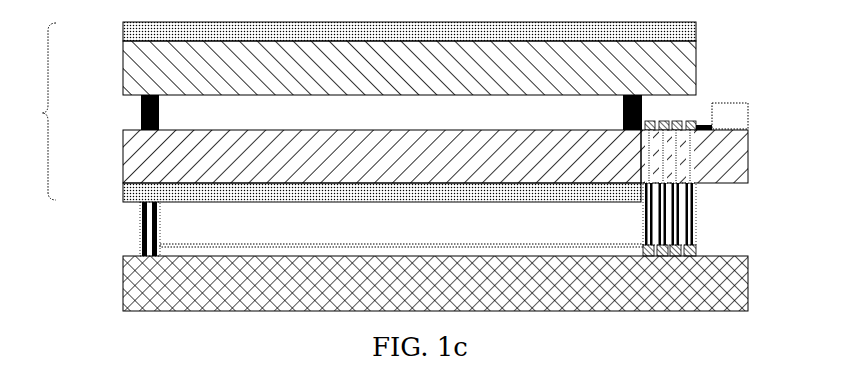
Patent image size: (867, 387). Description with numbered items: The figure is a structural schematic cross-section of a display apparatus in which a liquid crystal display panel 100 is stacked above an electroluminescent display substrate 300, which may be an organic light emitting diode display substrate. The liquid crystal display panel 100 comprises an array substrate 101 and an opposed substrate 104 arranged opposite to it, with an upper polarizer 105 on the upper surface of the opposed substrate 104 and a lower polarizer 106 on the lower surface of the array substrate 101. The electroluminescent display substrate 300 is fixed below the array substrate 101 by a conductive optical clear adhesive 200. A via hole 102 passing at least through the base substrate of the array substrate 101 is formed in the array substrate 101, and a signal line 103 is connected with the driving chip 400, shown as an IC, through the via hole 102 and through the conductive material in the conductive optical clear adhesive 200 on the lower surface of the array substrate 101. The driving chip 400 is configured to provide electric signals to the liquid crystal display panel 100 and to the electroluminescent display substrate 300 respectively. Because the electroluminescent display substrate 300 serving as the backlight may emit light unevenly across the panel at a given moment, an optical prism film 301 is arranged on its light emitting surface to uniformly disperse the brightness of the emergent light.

The liquid crystal display panel 100 is at (34, 111).
The upper polarizer 105 is at (123, 32).
The opposed substrate 104 is at (123, 64).
The array substrate 101 is at (123, 157).
The via hole 102 is at (748, 147).
The lower polarizer 106 is at (123, 194).
The driving chip 400 is at (748, 115).
The conductive optical clear adhesive 200 is at (696, 200).
The signal line 103 is at (696, 247).
The optical prism film 301 is at (152, 253).
The electroluminescent display substrate 300 is at (748, 290).